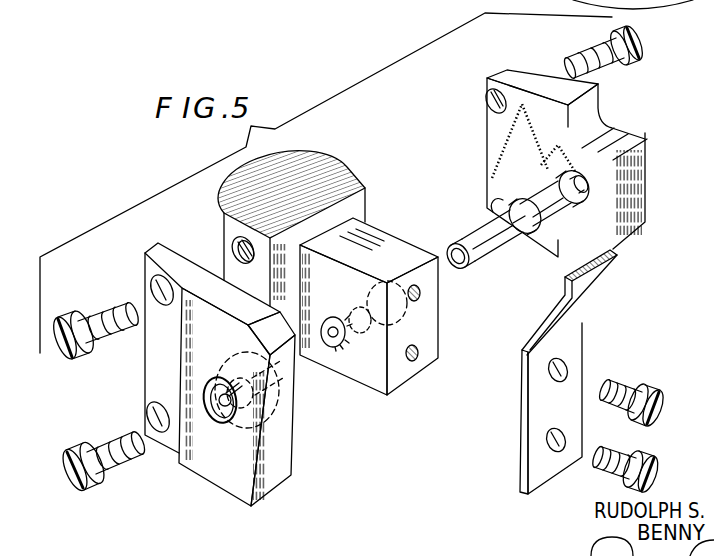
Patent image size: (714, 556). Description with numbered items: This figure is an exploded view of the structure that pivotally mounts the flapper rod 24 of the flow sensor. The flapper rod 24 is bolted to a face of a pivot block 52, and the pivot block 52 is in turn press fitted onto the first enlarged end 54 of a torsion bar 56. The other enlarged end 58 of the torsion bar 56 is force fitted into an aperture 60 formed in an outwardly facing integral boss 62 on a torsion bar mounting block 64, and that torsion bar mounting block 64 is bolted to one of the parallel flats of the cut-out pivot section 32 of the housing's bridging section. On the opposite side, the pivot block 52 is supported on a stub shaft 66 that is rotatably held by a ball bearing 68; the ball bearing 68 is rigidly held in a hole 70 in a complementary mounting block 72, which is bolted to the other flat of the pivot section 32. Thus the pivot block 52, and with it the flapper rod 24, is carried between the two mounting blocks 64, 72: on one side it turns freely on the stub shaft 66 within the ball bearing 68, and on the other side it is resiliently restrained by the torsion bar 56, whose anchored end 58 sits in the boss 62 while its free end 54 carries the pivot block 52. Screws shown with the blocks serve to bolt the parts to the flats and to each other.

The flapper rod 24 is at (540, 404).
The cut-out pivot section 32 is at (297, 185).
The pivot block 52 is at (405, 248).
The first enlarged end 54 is at (483, 268).
The torsion bar 56 is at (495, 252).
The other enlarged end 58 is at (542, 236).
The aperture 60 is at (590, 186).
The integral boss 62 is at (620, 140).
The torsion bar mounting block 64 is at (500, 131).
The stub shaft 66 is at (210, 408).
The ball bearing 68 is at (217, 384).
The hole 70 is at (230, 418).
The complementary mounting block 72 is at (218, 392).